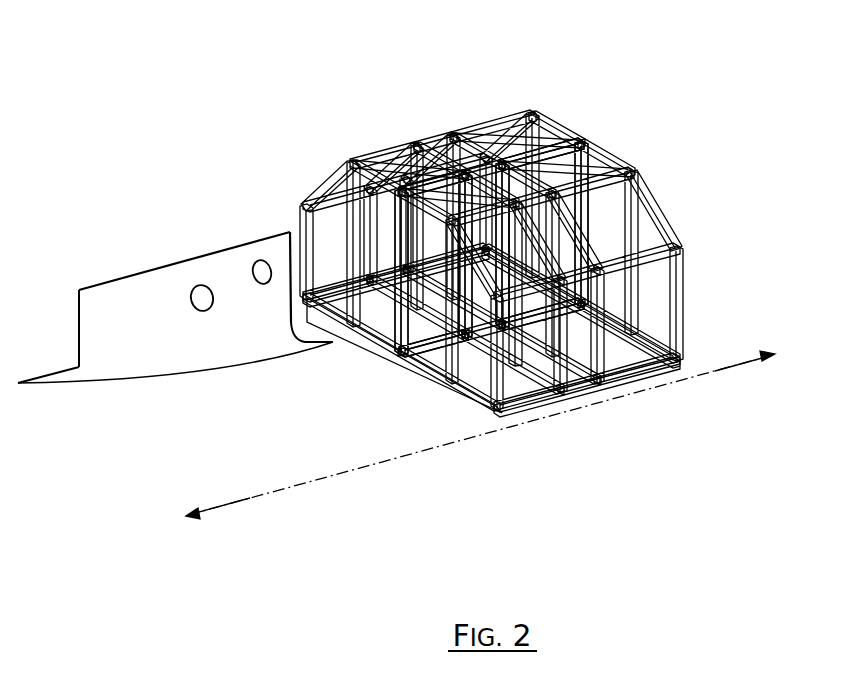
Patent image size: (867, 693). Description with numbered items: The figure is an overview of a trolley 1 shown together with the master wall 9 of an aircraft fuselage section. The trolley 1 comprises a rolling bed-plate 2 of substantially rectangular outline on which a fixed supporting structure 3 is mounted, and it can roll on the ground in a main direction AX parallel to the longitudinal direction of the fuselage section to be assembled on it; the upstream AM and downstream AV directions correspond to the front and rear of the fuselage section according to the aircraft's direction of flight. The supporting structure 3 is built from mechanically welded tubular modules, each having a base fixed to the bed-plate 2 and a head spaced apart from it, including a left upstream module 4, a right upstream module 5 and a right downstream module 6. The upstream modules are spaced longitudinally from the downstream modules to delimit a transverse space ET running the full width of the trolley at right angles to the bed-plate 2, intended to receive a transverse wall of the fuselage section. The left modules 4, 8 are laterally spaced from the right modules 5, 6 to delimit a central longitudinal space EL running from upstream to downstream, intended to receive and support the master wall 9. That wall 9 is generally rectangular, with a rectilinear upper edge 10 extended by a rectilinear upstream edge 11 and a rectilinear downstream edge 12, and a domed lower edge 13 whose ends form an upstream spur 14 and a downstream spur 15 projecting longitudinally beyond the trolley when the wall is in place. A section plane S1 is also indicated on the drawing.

The trolley 1 is at (637, 113).
The rolling bed-plate 2 is at (640, 358).
The fixed supporting structure 3 is at (697, 205).
The left upstream module 4 is at (465, 133).
The right upstream module 5 is at (680, 295).
The right downstream module 6 is at (472, 348).
The left module 8 is at (357, 162).
The master wall 9 is at (155, 295).
The upper edge 10 is at (220, 248).
The upstream edge 11 is at (295, 270).
The downstream edge 12 is at (78, 330).
The lower edge 13 is at (140, 378).
The upstream spur 14 is at (320, 345).
The downstream spur 15 is at (58, 378).
The central longitudinal space EL is at (533, 152).
The transverse space ET is at (578, 366).
The section plane S1 is at (270, 434).
The main direction AX is at (385, 458).
The downstream AV is at (227, 505).
The upstream AM is at (737, 367).